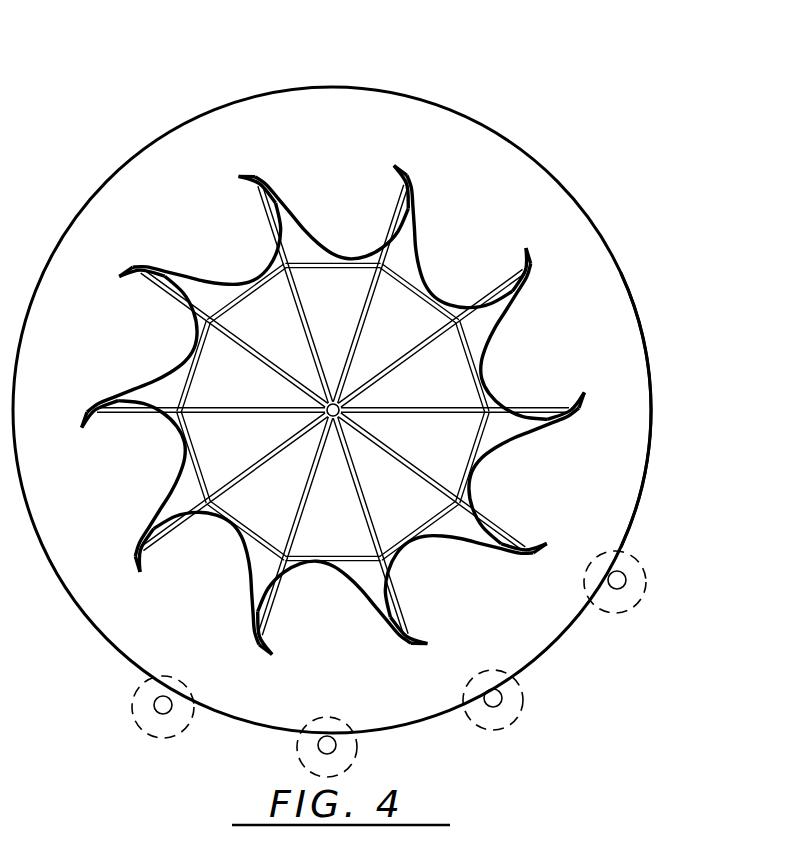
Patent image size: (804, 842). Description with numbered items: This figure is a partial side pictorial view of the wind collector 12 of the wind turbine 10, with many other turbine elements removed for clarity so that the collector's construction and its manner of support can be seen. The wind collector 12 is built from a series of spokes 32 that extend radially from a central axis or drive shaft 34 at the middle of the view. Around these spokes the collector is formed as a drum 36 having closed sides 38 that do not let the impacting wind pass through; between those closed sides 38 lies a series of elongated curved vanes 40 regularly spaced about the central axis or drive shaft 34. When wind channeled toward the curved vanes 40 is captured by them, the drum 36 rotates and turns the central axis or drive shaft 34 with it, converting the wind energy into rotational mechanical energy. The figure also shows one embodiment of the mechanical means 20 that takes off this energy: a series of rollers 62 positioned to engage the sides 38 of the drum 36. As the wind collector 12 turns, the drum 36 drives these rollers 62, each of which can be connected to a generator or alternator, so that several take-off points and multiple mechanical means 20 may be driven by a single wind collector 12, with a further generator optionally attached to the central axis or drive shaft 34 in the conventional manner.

The wind turbine 10 is at (349, 63).
The wind collector 12 is at (468, 115).
The mechanical means 20 is at (185, 733).
The spokes 32 is at (385, 372).
The central axis or drive shaft 34 is at (322, 407).
The drum 36 is at (427, 271).
The closed sides 38 is at (637, 302).
The curved vanes 40 is at (398, 183).
The rollers 62 is at (160, 705).